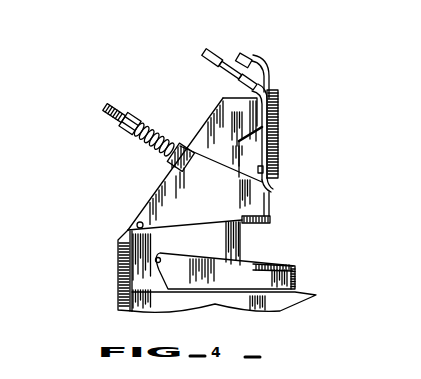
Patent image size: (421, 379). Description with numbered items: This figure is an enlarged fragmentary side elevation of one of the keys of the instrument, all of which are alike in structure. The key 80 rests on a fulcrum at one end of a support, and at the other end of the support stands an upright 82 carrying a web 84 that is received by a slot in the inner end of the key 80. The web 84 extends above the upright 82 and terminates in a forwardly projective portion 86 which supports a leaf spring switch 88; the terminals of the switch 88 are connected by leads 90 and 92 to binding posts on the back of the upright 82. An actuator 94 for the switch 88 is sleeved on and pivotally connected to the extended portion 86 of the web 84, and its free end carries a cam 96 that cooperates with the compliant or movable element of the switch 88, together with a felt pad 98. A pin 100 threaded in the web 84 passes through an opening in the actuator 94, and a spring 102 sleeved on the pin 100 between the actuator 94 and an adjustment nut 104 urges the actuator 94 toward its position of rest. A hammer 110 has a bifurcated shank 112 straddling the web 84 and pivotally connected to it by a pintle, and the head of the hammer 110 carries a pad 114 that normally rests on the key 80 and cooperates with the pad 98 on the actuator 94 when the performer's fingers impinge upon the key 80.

The key 80 is at (281, 310).
The upright 82 is at (125, 278).
The web 84 is at (230, 242).
The forwardly projective portion 86 is at (232, 107).
The leaf spring switch 88 is at (278, 110).
The lead 90 is at (207, 55).
The lead 92 is at (253, 53).
The actuator 94 is at (172, 195).
The cam 96 is at (271, 192).
The felt pad 98 is at (270, 220).
The pin 100 is at (103, 113).
The spring 102 is at (152, 147).
The adjustment nut 104 is at (128, 128).
The hammer 110 is at (294, 268).
The bifurcated shank 112 is at (200, 280).
The pad 114 is at (296, 278).